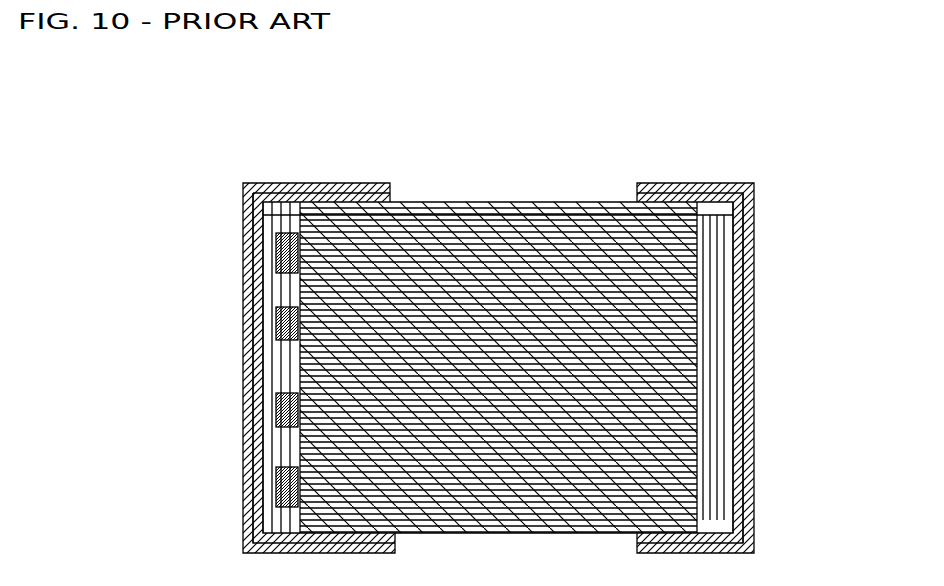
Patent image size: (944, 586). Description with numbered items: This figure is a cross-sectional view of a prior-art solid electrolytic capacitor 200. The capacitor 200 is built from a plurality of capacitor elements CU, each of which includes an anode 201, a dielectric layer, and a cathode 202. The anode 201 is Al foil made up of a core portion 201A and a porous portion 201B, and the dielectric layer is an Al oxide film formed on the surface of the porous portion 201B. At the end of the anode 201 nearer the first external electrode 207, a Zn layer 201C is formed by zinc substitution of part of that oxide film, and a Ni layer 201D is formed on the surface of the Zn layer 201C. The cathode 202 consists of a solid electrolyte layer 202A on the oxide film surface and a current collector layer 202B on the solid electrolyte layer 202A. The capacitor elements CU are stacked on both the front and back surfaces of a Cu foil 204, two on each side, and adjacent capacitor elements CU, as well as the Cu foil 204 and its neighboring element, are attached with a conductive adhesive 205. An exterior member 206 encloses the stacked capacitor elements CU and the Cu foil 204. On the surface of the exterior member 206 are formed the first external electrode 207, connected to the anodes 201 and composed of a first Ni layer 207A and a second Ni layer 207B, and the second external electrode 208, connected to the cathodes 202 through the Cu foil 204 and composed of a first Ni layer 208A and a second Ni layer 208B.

The solid electrolytic capacitor 200 is at (900, 60).
The capacitor element CU is at (602, 104).
The anode 201 is at (450, 140).
The core portion 201A is at (406, 222).
The porous portion 201B is at (340, 225).
The Zn layer 201C is at (281, 235).
The Ni layer 201D is at (276, 240).
The cathode 202 is at (605, 140).
The solid electrolyte layer 202A is at (508, 215).
The current collector layer 202B is at (553, 212).
The Cu foil 204 is at (722, 362).
The conductive adhesive 205 is at (722, 290).
The exterior member 206 is at (608, 202).
The first external electrode 207 is at (152, 412).
The first Ni layer 207A is at (258, 445).
The second Ni layer 207B is at (248, 500).
The second external electrode 208 is at (842, 400).
The first Ni layer 208A is at (738, 425).
The second Ni layer 208B is at (748, 483).